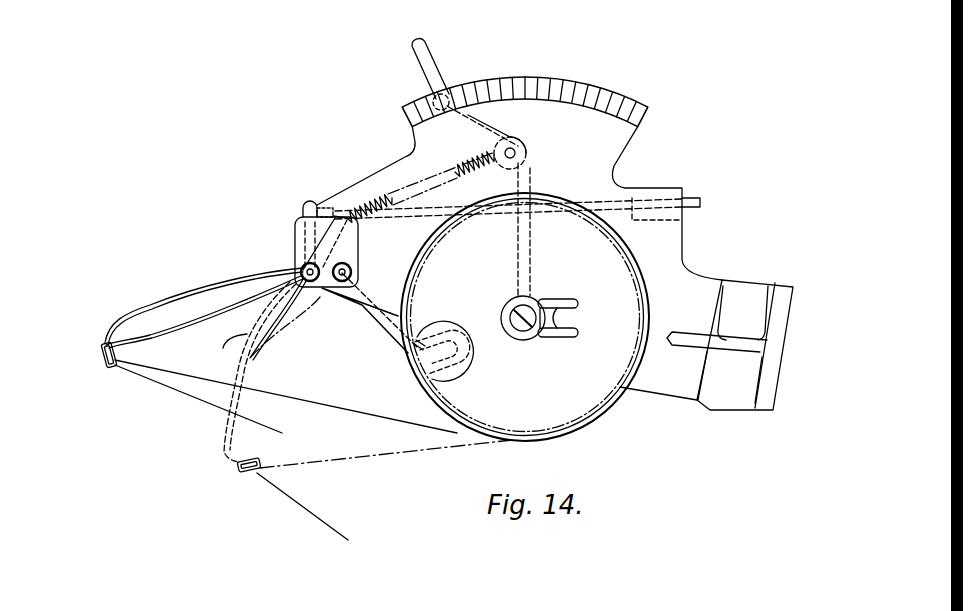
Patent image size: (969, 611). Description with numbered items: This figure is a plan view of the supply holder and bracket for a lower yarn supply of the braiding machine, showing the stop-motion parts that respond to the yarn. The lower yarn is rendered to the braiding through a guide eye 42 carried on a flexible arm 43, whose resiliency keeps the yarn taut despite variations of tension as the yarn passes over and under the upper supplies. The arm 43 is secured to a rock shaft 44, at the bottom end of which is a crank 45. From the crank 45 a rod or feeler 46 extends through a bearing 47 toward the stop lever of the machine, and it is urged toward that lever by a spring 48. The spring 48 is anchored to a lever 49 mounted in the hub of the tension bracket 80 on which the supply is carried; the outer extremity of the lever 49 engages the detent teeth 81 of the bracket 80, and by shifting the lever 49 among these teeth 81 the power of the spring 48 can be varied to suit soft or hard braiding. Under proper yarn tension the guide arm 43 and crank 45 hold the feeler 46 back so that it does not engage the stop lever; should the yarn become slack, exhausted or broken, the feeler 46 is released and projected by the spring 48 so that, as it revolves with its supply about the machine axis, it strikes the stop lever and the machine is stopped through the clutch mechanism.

The guide eye 42 is at (105, 363).
The flexible arm 43 is at (173, 297).
The rock shaft 44 is at (218, 296).
The crank 45 is at (300, 234).
The rod or feeler 46 is at (420, 219).
The bearing 47 is at (672, 216).
The spring 48 is at (427, 178).
The lever 49 is at (518, 257).
The tension bracket 80 is at (663, 398).
The detent teeth 81 is at (612, 104).